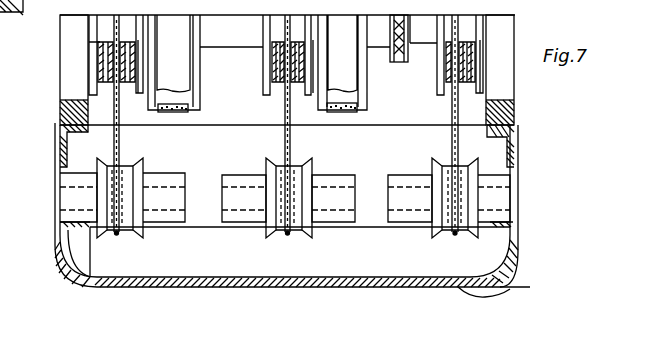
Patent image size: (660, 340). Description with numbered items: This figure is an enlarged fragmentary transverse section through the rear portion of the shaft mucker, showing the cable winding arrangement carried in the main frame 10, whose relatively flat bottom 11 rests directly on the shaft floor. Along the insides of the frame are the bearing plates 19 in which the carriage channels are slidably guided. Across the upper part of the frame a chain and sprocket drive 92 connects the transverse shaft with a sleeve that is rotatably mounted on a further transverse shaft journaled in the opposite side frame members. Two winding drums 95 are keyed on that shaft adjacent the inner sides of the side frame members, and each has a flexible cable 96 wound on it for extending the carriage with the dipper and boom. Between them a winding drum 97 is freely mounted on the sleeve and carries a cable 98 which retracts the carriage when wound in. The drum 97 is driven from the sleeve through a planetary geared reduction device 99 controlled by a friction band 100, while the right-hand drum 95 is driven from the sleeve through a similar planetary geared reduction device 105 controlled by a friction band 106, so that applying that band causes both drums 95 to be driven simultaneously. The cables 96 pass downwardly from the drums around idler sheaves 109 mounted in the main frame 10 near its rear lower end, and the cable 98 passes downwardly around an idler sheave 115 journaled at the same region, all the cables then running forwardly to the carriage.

The main frame 10 is at (518, 148).
The bottom 11 is at (500, 290).
The bearing plates 19 is at (60, 152).
The chain and sprocket drive 92 is at (405, 60).
The winding drums 95 is at (38, 3).
The flexible cable 96 is at (119, 143).
The winding drum 97 is at (265, 93).
The cable 98 is at (285, 145).
The planetary geared reduction device 99 is at (368, 85).
The friction band 100 is at (345, 113).
The planetary geared reduction device 105 is at (200, 72).
The friction band 106 is at (186, 113).
The idler sheaves 109 is at (142, 238).
The idler sheave 115 is at (268, 238).